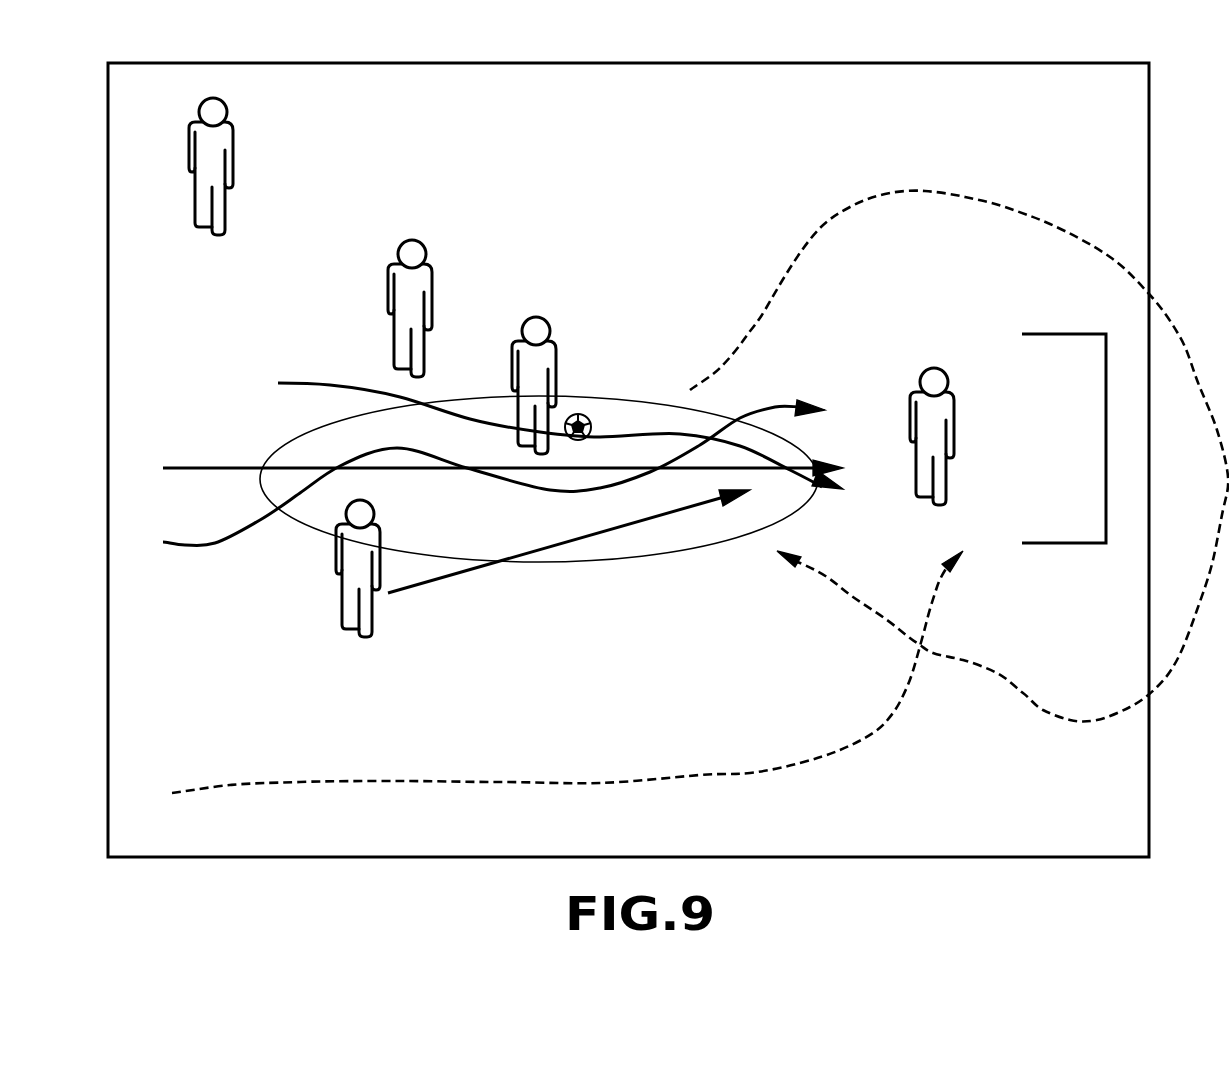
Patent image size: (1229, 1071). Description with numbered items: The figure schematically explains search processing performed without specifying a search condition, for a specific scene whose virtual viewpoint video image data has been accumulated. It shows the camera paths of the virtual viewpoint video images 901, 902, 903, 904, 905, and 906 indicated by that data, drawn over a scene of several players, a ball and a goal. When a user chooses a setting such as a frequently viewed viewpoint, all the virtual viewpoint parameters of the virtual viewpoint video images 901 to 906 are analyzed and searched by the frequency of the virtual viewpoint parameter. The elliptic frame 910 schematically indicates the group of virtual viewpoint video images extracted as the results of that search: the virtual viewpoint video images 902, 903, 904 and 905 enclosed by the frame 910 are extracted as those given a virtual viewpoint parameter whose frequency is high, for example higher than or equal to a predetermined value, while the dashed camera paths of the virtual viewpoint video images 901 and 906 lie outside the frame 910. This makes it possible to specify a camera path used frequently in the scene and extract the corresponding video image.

The virtual viewpoint video image camera path 901 is at (760, 313).
The virtual viewpoint video image camera path 902 is at (305, 381).
The virtual viewpoint video image camera path 903 is at (212, 466).
The virtual viewpoint video image camera path 904 is at (212, 548).
The virtual viewpoint video image camera path 905 is at (432, 585).
The virtual viewpoint video image camera path 906 is at (538, 782).
The elliptic frame 910 is at (585, 563).